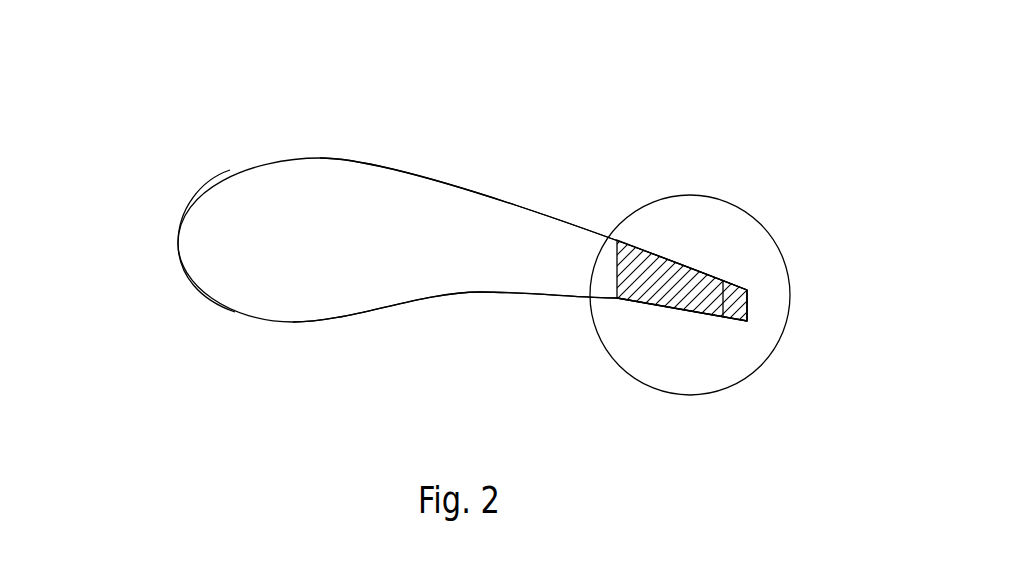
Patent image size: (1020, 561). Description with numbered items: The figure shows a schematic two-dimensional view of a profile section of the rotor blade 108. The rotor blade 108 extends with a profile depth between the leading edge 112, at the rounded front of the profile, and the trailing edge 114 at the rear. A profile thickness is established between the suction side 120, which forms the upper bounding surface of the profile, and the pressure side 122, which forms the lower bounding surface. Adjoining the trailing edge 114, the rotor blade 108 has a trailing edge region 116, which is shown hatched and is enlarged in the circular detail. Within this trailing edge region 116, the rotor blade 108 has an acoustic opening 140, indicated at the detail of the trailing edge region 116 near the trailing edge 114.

The rotor blade 108 is at (227, 137).
The suction side 120 is at (450, 152).
The leading edge 112 is at (167, 260).
The pressure side 122 is at (420, 315).
The trailing edge region 116 is at (713, 268).
The trailing edge 114 is at (753, 308).
The acoustic opening 140 is at (715, 298).